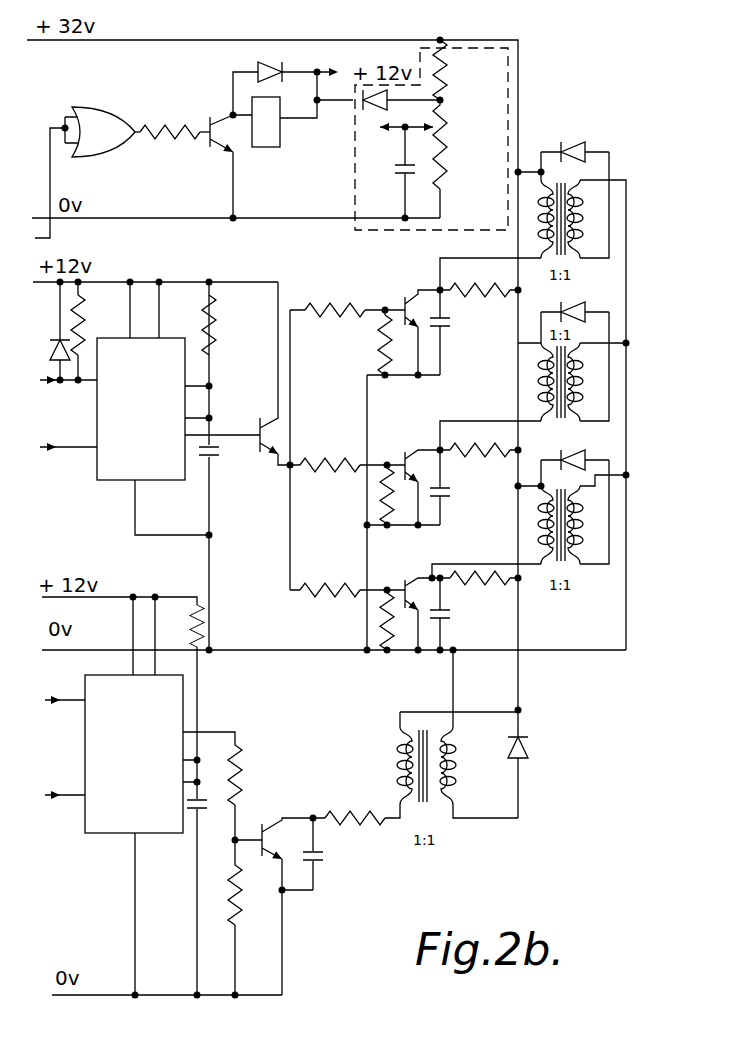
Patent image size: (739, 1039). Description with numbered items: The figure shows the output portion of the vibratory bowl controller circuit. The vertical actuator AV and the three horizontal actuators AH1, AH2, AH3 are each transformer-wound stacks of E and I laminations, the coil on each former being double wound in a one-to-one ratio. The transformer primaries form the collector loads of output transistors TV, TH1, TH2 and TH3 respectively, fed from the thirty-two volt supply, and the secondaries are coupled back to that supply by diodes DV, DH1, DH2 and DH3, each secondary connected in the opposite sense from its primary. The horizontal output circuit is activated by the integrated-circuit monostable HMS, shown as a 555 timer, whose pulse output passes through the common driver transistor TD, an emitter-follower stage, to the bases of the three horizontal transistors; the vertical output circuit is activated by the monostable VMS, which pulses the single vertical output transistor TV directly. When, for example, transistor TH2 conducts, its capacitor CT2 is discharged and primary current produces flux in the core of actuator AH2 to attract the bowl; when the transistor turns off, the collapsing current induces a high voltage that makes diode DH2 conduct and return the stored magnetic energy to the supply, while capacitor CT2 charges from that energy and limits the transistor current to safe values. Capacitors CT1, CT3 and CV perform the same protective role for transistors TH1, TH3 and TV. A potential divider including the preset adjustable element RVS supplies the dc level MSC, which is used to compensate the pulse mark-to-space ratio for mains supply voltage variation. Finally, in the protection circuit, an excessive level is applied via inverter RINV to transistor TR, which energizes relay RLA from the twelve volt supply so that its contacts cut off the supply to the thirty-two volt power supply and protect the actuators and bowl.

The inverter RINV is at (128, 146).
The transistor TR is at (222, 114).
The relay RLA is at (280, 140).
The mains supply compensation voltage level MSC is at (506, 106).
The preset adjustable element RVS is at (446, 135).
The diode DH1 is at (600, 130).
The diode DH2 is at (600, 300).
The diode DH3 is at (600, 458).
The horizontal actuator AH1 is at (586, 234).
The horizontal actuator AH2 is at (586, 402).
The horizontal actuator AH3 is at (586, 522).
The horizontal output transistor TH1 is at (408, 300).
The horizontal output transistor TH2 is at (418, 442).
The horizontal output transistor TH3 is at (408, 585).
The capacitor CT1 is at (446, 328).
The capacitor CT2 is at (447, 496).
The capacitor CT3 is at (446, 617).
The driver transistor TD is at (259, 422).
The horizontal monostable HMS is at (130, 427).
The 555 timer IC 555 is at (115, 482).
The vertical monostable VMS is at (125, 777).
The vertical output transistor TV is at (262, 824).
The capacitor CV is at (321, 856).
The vertical actuator AV is at (392, 782).
The diode DV is at (530, 752).